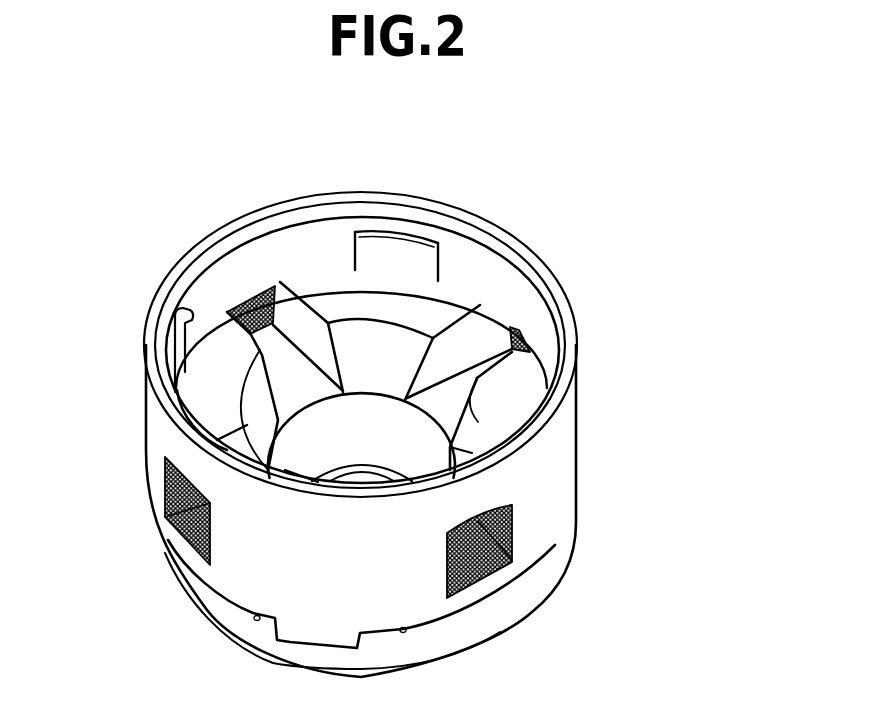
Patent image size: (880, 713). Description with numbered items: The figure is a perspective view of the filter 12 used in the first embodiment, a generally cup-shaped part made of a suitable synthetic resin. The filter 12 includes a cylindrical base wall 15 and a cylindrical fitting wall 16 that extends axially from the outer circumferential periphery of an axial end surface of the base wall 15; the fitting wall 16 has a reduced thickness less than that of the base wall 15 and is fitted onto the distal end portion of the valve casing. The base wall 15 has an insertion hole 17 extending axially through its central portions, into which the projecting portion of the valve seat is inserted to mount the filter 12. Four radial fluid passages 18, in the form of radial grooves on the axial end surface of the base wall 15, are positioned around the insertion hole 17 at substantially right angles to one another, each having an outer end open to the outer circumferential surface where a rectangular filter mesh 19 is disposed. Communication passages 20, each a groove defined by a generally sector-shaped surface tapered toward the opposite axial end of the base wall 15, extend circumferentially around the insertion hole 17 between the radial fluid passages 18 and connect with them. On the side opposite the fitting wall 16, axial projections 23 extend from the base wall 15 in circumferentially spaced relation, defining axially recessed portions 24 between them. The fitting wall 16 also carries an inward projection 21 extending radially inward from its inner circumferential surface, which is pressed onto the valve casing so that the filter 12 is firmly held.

The filter 12 is at (582, 363).
The cylindrical base wall 15 is at (448, 300).
The cylindrical fitting wall 16 is at (572, 403).
The insertion hole 17 is at (430, 458).
The radial fluid passages 18 is at (290, 312).
The filter mesh 19 is at (232, 300).
The communication passages 20 is at (357, 337).
The inward projection 21 is at (420, 253).
The axial projections 23 is at (557, 546).
The axially recessed portions 24 is at (258, 615).